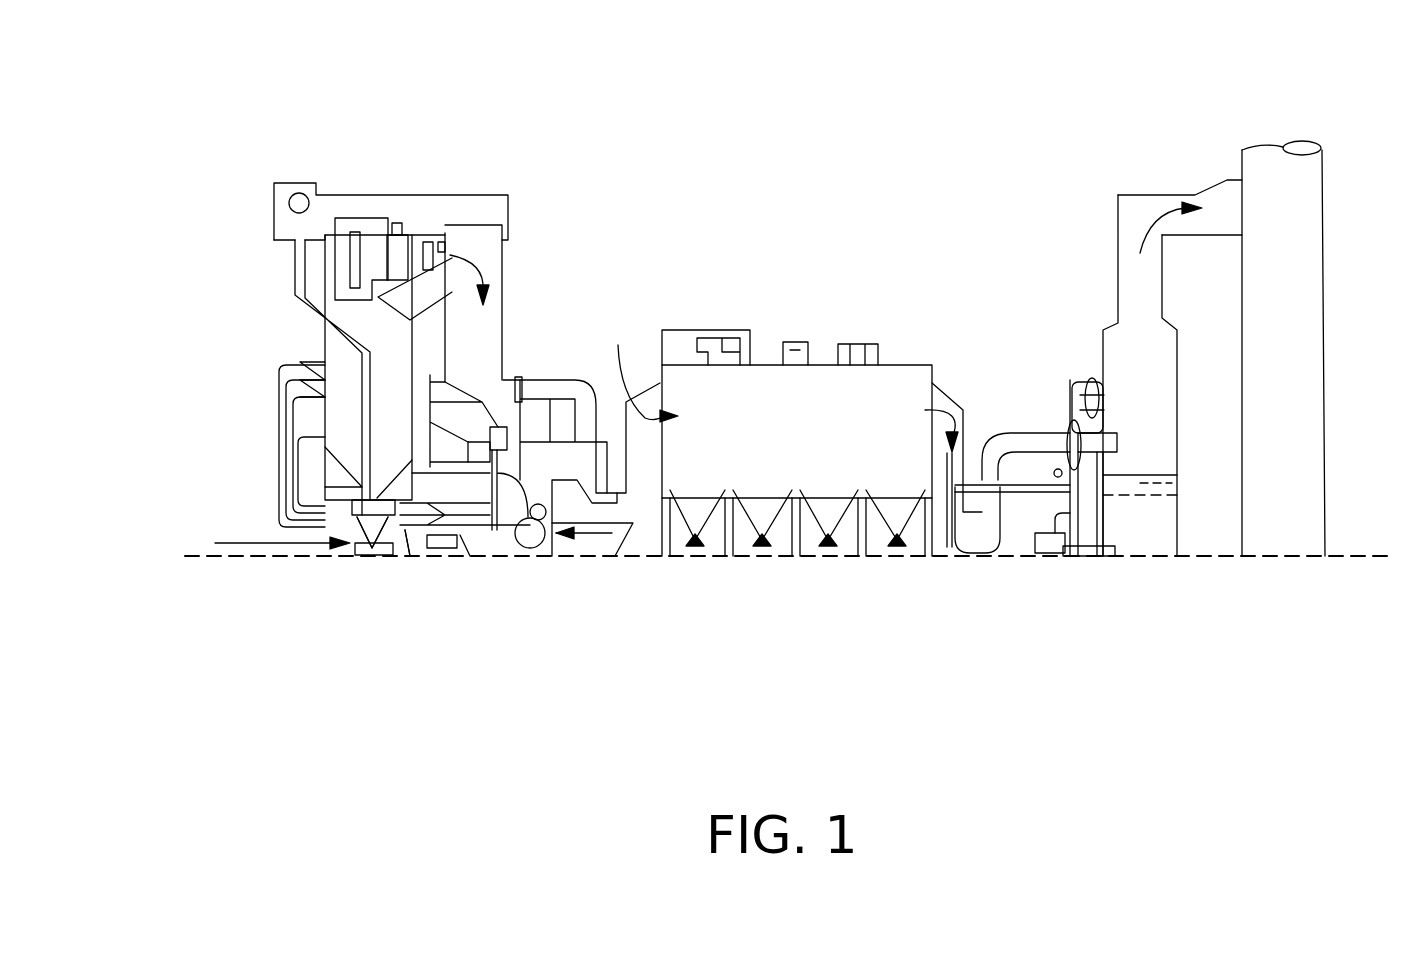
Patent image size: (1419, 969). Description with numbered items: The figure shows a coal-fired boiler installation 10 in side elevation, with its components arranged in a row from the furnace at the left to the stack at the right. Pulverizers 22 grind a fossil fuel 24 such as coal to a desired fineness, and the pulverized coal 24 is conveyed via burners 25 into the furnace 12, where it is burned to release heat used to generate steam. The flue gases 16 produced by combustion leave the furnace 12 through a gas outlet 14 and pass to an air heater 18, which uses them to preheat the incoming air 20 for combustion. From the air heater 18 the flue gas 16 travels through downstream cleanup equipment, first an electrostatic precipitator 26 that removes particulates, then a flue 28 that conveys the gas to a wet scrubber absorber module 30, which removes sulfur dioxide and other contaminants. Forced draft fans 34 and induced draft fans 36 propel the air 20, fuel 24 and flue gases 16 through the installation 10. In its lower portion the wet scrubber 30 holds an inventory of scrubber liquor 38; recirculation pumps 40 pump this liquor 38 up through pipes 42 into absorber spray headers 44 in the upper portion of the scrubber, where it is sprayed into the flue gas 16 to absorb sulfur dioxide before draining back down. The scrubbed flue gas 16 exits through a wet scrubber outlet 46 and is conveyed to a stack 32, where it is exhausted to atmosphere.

The boiler installation 10 is at (670, 150).
The furnace 12 is at (372, 408).
The gas outlet 14 is at (457, 360).
The flue gases 16 is at (450, 255).
The air heater 18 is at (547, 477).
The incoming air 20 is at (597, 533).
The pulverizers 22 is at (437, 557).
The fossil fuel 24 is at (255, 543).
The burners 25 is at (298, 398).
The electrostatic precipitator 26 is at (761, 428).
The flue 28 is at (1018, 433).
The wet scrubber absorber module 30 is at (1119, 400).
The stack 32 is at (1267, 518).
The forced draft fans 34 is at (532, 538).
The induced draft fans 36 is at (978, 555).
The scrubber liquor 38 is at (1124, 535).
The recirculation pumps 40 is at (1050, 560).
The pipes 42 is at (1068, 455).
The absorber spray headers 44 is at (1093, 382).
The wet scrubber outlet 46 is at (1125, 195).